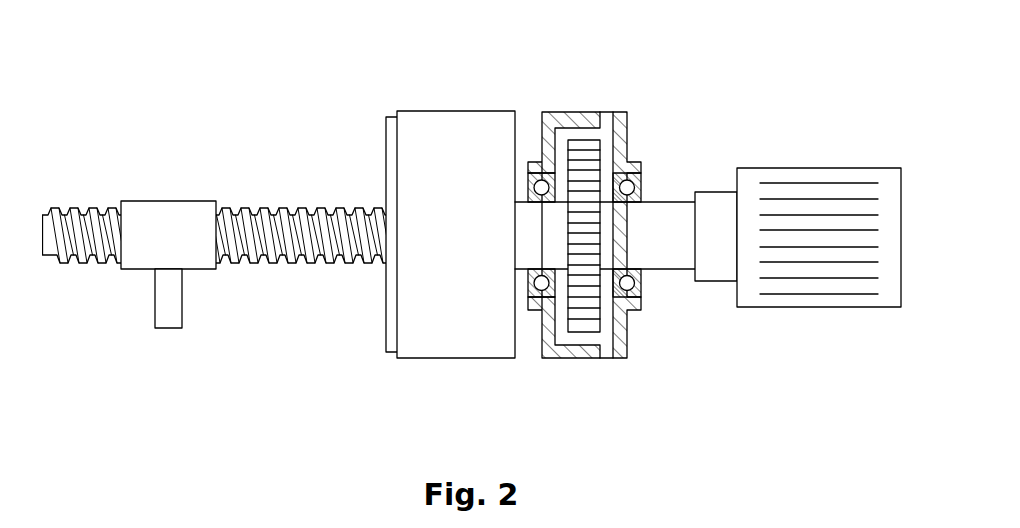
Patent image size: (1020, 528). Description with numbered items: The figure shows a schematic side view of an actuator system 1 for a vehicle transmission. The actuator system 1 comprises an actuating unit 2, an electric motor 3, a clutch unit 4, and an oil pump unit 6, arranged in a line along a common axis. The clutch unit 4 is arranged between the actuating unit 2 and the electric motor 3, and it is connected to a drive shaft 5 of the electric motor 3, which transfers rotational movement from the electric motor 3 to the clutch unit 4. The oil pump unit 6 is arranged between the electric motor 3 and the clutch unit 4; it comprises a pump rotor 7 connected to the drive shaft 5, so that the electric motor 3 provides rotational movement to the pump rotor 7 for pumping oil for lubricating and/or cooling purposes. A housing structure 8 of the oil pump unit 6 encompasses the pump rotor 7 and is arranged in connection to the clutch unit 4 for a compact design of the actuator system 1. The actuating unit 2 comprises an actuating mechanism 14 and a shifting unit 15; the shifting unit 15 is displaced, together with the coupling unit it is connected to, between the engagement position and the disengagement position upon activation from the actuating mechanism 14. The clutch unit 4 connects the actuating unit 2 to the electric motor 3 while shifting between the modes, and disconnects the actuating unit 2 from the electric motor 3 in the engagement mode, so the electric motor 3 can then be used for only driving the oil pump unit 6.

The actuator system 1 is at (748, 72).
The actuating unit 2 is at (167, 100).
The electric motor 3 is at (822, 168).
The clutch unit 4 is at (459, 111).
The drive shaft 5 is at (663, 230).
The oil pump unit 6 is at (643, 118).
The pump rotor 7 is at (583, 140).
The housing structure 8 is at (557, 112).
The actuating mechanism 14 is at (296, 208).
The shifting unit 15 is at (165, 296).